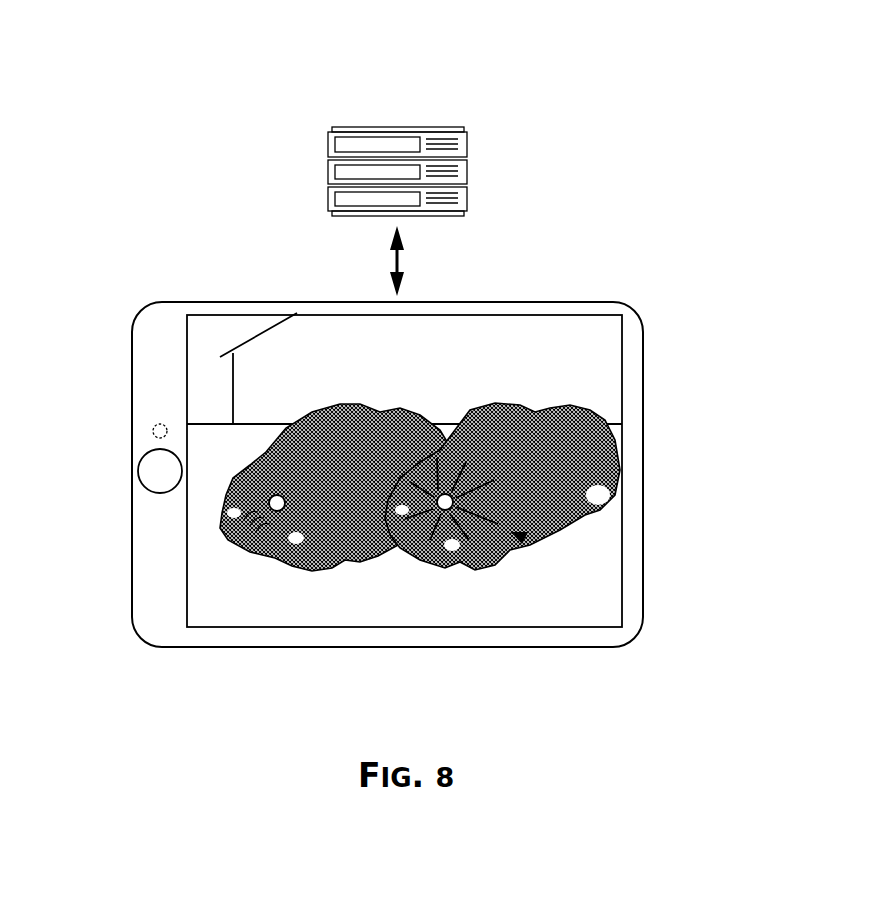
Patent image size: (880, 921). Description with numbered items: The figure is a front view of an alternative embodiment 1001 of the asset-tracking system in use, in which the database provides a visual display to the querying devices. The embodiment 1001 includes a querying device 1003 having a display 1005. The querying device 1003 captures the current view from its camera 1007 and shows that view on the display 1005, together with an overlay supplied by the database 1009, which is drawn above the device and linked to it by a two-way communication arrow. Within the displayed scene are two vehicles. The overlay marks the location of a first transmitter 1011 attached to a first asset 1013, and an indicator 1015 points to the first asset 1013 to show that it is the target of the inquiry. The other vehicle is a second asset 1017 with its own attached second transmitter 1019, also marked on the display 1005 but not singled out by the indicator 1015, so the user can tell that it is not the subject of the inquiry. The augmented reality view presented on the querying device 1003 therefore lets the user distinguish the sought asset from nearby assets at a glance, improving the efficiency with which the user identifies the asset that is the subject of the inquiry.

The embodiment 1001 is at (118, 53).
The querying device 1003 is at (643, 430).
The display 1005 is at (622, 358).
The camera 1007 is at (151, 431).
The database 1009 is at (467, 133).
The first transmitter 1011 is at (445, 511).
The first asset 1013 is at (593, 503).
The indicator 1015 is at (520, 536).
The second asset 1017 is at (328, 567).
The second transmitter 1019 is at (277, 511).